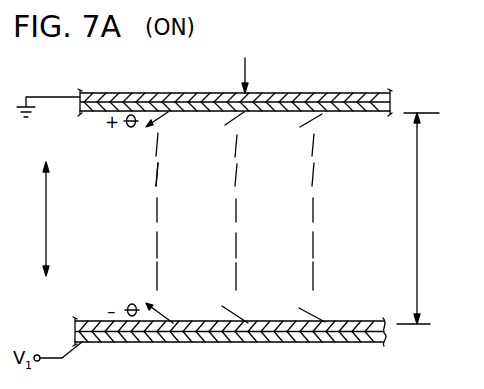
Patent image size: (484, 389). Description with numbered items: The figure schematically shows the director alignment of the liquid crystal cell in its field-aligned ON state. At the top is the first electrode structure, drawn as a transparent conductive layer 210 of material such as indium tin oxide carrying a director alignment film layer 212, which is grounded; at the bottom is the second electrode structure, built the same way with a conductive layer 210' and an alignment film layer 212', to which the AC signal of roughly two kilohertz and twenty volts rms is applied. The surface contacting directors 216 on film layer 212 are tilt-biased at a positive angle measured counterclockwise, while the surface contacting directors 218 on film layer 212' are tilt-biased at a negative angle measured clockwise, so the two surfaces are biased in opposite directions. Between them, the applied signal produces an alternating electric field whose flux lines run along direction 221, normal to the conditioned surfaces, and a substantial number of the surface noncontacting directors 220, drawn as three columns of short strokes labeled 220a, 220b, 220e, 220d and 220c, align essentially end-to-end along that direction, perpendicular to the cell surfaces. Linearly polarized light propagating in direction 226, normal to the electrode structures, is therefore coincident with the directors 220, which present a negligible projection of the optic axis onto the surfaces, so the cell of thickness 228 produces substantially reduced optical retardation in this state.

The conductive layer 210 is at (210, 88).
The director alignment film layer 212 is at (215, 125).
The surface contacting directors 216 is at (168, 112).
The surface contacting directors 218 is at (163, 316).
The surface noncontacting directors 220 is at (146, 184).
The surface noncontacting director 220a is at (158, 137).
The surface noncontacting director 220b is at (158, 167).
The surface noncontacting director 220c is at (157, 287).
The surface noncontacting director 220d is at (157, 256).
The surface noncontacting director 220e is at (157, 221).
The direction of the electric field flux lines 221 is at (46, 236).
The direction of light propagation 226 is at (246, 66).
The thickness 228 is at (418, 228).
The conductive layer 210' is at (199, 332).
The director alignment film layer 212' is at (218, 314).